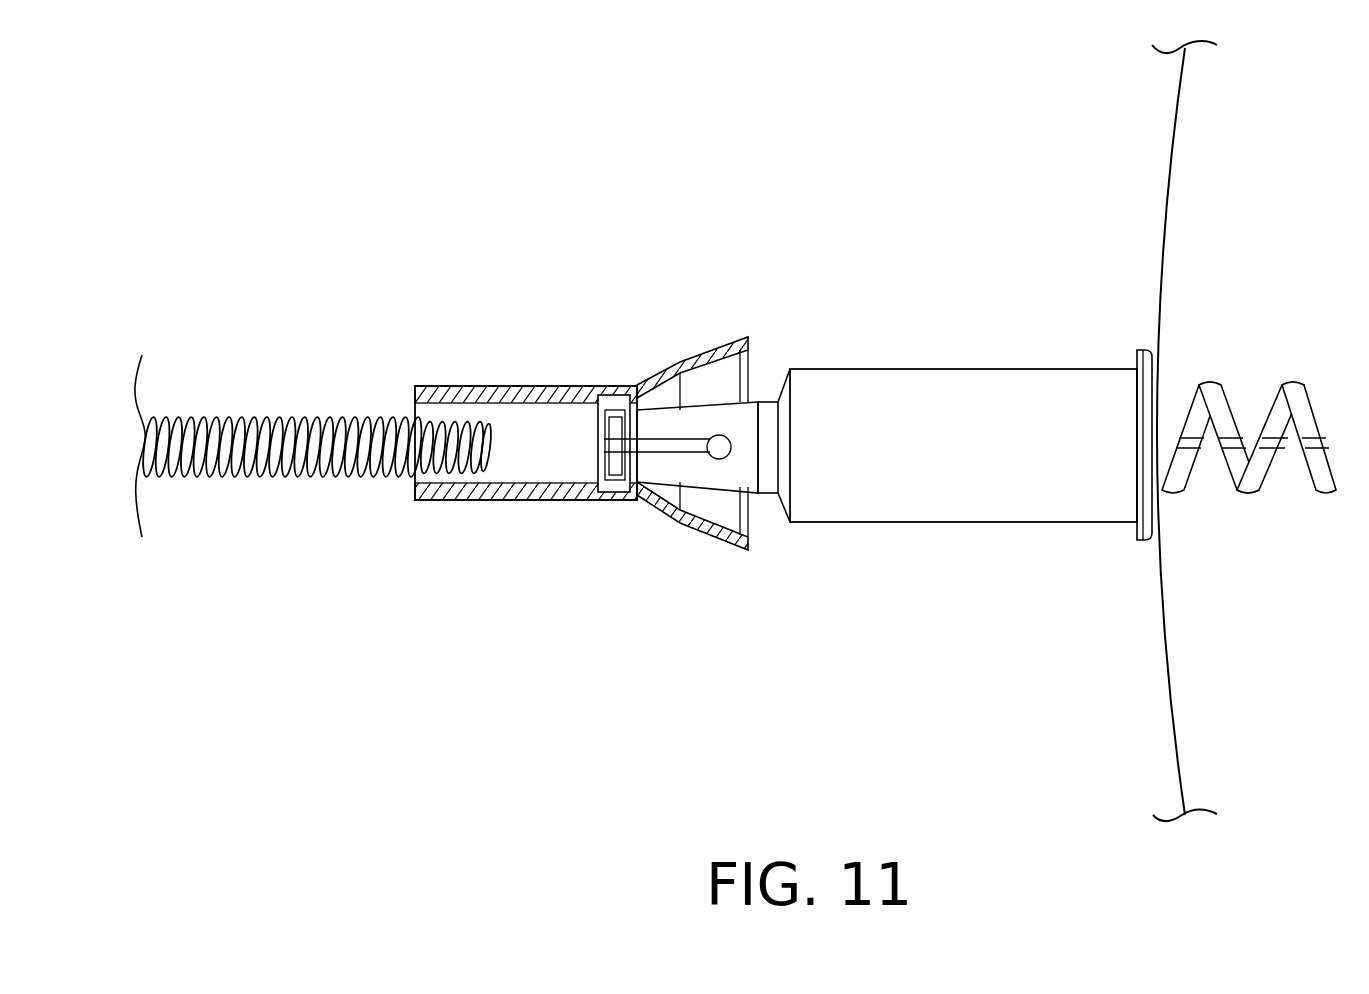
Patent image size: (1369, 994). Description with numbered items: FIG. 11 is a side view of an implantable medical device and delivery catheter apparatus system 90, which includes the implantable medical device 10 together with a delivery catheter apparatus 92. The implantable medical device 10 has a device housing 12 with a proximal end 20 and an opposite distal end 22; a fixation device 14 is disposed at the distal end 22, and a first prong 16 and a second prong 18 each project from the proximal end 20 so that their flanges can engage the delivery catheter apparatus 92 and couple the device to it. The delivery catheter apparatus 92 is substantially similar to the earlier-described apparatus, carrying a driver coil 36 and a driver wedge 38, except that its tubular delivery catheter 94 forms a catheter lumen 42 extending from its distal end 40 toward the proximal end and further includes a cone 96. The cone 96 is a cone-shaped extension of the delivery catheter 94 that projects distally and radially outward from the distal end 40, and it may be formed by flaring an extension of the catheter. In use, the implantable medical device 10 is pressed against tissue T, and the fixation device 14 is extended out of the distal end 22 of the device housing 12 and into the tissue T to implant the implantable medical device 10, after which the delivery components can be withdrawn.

The implantable medical device 10 is at (971, 405).
The device housing 12 is at (925, 365).
The fixation device 14 is at (1306, 383).
The first prong 16 is at (694, 398).
The second prong 18 is at (701, 492).
The proximal end 20 is at (776, 400).
The distal end 22 is at (1150, 348).
The driver coil 36 is at (249, 415).
The driver wedge 38 is at (448, 458).
The distal end 40 is at (640, 393).
The catheter lumen 42 is at (529, 407).
The implantable medical device and delivery catheter apparatus system 90 is at (740, 413).
The delivery catheter apparatus 92 is at (526, 380).
The delivery catheter 94 is at (571, 375).
The cone 96 is at (722, 343).
The tissue T is at (1172, 120).